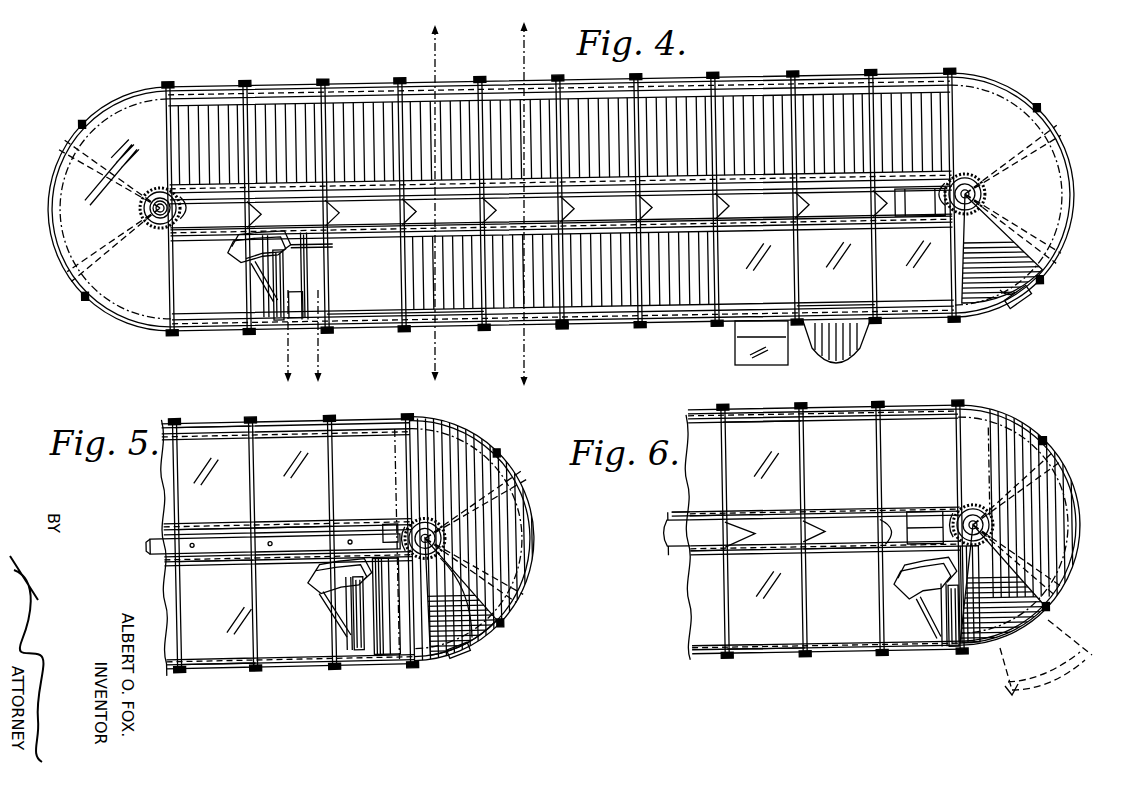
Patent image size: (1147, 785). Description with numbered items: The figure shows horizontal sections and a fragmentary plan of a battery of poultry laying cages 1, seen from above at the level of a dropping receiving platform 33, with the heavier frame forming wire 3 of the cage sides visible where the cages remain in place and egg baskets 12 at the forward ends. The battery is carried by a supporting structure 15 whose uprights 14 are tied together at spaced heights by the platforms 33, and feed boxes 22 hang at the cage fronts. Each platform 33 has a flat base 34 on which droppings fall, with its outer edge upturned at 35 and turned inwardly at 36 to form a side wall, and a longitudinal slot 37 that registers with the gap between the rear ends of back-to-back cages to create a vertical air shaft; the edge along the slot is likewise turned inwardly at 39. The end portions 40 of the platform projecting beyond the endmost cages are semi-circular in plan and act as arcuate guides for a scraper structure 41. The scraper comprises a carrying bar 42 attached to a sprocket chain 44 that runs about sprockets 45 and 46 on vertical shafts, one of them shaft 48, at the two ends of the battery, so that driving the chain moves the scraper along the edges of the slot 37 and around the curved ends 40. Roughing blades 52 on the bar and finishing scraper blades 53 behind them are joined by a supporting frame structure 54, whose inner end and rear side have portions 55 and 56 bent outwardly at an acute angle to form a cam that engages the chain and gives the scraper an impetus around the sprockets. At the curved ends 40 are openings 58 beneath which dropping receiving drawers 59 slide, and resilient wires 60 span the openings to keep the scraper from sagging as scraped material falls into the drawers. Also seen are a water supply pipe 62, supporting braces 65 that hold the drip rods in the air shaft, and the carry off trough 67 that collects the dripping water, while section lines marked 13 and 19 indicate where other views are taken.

In FIG. 4, the cage 1 is at (297, 105).
In FIG. 4, the frame forming wire 3 is at (527, 204).
In FIG. 4, the egg basket 12 is at (855, 350).
In FIG. 4, the section line 13 is at (436, 202).
In FIG. 4, the upright 14 is at (407, 82).
In FIG. 5, the upright 14 is at (334, 420).
In FIG. 6, the upright 14 is at (810, 410).
In FIG. 4, the supporting structure 15 is at (572, 326).
In FIG. 6, the supporting structure 15 is at (892, 408).
In FIG. 4, the section line 19 is at (301, 347).
In FIG. 4, the feed box 22 is at (778, 360).
In FIG. 4, the dropping receiving platform 33 is at (366, 312).
In FIG. 5, the dropping receiving platform 33 is at (207, 666).
In FIG. 6, the dropping receiving platform 33 is at (782, 652).
In FIG. 4, the flat base 34 is at (392, 310).
In FIG. 5, the flat base 34 is at (205, 440).
In FIG. 6, the flat base 34 is at (765, 428).
In FIG. 4, the upturned outer edge 35 is at (912, 297).
In FIG. 4, the inwardly turned edge 36 is at (833, 313).
In FIG. 5, the inwardly turned edge 36 is at (276, 468).
In FIG. 6, the inwardly turned edge 36 is at (705, 655).
In FIG. 4, the slot 37 is at (840, 213).
In FIG. 5, the slot 37 is at (280, 560).
In FIG. 6, the slot 37 is at (672, 550).
In FIG. 4, the inwardly turned slot edge 39 is at (760, 223).
In FIG. 5, the inwardly turned slot edge 39 is at (208, 528).
In FIG. 6, the inwardly turned slot edge 39 is at (715, 553).
In FIG. 4, the end portion 40 is at (990, 98).
In FIG. 5, the end portion 40 is at (480, 456).
In FIG. 6, the end portion 40 is at (985, 425).
In FIG. 4, the scraper structure 41 is at (265, 312).
In FIG. 5, the scraper structure 41 is at (348, 655).
In FIG. 6, the scraper structure 41 is at (936, 646).
In FIG. 4, the carrying bar 42 is at (334, 246).
In FIG. 5, the carrying bar 42 is at (400, 640).
In FIG. 4, the sprocket chain 44 is at (155, 225).
In FIG. 5, the sprocket chain 44 is at (430, 520).
In FIG. 6, the sprocket chain 44 is at (968, 510).
In FIG. 4, the sprocket 45 is at (935, 216).
In FIG. 5, the sprocket 45 is at (405, 530).
In FIG. 6, the sprocket 45 is at (995, 533).
In FIG. 4, the sprocket 46 is at (137, 206).
In FIG. 4, the vertical shaft 48 is at (160, 185).
In FIG. 5, the vertical shaft 48 is at (440, 540).
In FIG. 6, the vertical shaft 48 is at (992, 526).
In FIG. 4, the roughing blade 52 is at (308, 318).
In FIG. 5, the roughing blade 52 is at (382, 650).
In FIG. 6, the roughing blade 52 is at (968, 656).
In FIG. 4, the finishing scraper blade 53 is at (283, 317).
In FIG. 5, the finishing scraper blade 53 is at (360, 655).
In FIG. 6, the finishing scraper blade 53 is at (950, 650).
In FIG. 4, the supporting frame structure 54 is at (267, 307).
In FIG. 5, the supporting frame structure 54 is at (368, 660).
In FIG. 6, the supporting frame structure 54 is at (918, 614).
In FIG. 4, the bent portion 55 is at (250, 270).
In FIG. 5, the bent portion 55 is at (320, 595).
In FIG. 6, the bent portion 55 is at (906, 599).
In FIG. 4, the bent portion 56 is at (228, 249).
In FIG. 6, the bent portion 56 is at (895, 580).
In FIG. 4, the opening 58 is at (1030, 280).
In FIG. 5, the opening 58 is at (500, 634).
In FIG. 6, the opening 58 is at (1046, 600).
In FIG. 4, the dropping receiving drawer 59 is at (1023, 302).
In FIG. 5, the dropping receiving drawer 59 is at (455, 658).
In FIG. 6, the dropping receiving drawer 59 is at (1003, 692).
In FIG. 4, the wire 60 is at (341, 209).
In FIG. 5, the wire 60 is at (480, 640).
In FIG. 6, the wire 60 is at (758, 522).
In FIG. 5, the supply pipe 62 is at (212, 548).
In FIG. 4, the supporting brace 65 is at (262, 211).
In FIG. 6, the supporting brace 65 is at (805, 549).
In FIG. 6, the carry off trough 67 is at (668, 546).